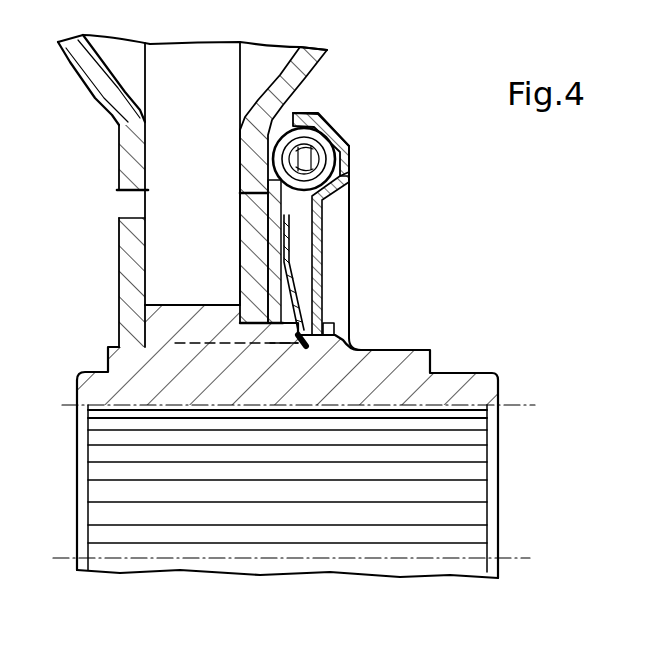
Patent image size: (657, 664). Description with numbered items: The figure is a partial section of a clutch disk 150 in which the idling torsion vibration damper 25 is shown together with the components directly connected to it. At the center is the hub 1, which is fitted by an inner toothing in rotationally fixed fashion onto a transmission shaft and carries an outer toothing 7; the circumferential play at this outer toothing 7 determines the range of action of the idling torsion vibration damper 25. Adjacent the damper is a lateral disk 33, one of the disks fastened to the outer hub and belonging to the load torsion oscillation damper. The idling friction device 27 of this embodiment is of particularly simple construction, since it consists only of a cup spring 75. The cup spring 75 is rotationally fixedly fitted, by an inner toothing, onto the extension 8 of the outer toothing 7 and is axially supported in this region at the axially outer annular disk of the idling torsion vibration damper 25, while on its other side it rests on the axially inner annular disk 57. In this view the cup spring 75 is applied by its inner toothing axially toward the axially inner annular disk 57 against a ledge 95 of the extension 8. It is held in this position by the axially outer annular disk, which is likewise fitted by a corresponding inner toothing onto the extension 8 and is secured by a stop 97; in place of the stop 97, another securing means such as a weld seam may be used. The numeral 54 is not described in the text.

The hub 1 is at (445, 383).
The outer toothing 7 is at (187, 320).
The extension 8 is at (278, 340).
The idling torsion vibration damper 25 is at (340, 121).
The idling friction device 27 is at (297, 231).
The lateral disk 33 is at (240, 150).
The spring arm 54 is at (322, 247).
The axially inner annular disk 57 is at (268, 230).
The cup spring 75 is at (322, 281).
The ledge 95 is at (300, 347).
The stop 97 is at (340, 325).
The clutch disk 150 is at (348, 70).